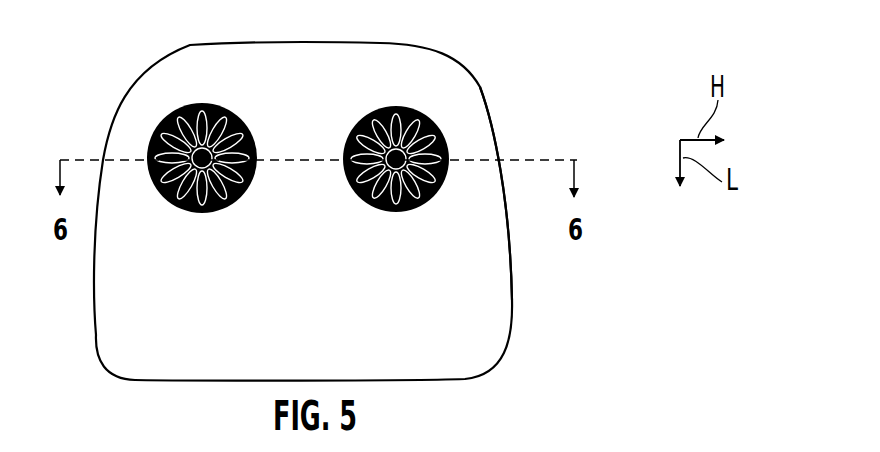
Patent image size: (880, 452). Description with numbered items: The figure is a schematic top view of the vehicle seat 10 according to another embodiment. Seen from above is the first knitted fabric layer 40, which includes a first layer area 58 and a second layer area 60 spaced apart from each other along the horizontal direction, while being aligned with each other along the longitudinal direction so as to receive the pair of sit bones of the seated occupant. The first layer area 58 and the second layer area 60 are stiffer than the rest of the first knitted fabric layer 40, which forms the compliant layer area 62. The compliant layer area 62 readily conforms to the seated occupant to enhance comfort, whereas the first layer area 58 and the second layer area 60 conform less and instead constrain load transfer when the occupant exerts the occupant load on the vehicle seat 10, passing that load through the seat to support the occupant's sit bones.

The vehicle seat 10 is at (106, 33).
The first knitted fabric layer 40 is at (490, 335).
The first layer area 58 is at (152, 137).
The second layer area 60 is at (442, 128).
The compliant layer area 62 is at (493, 280).